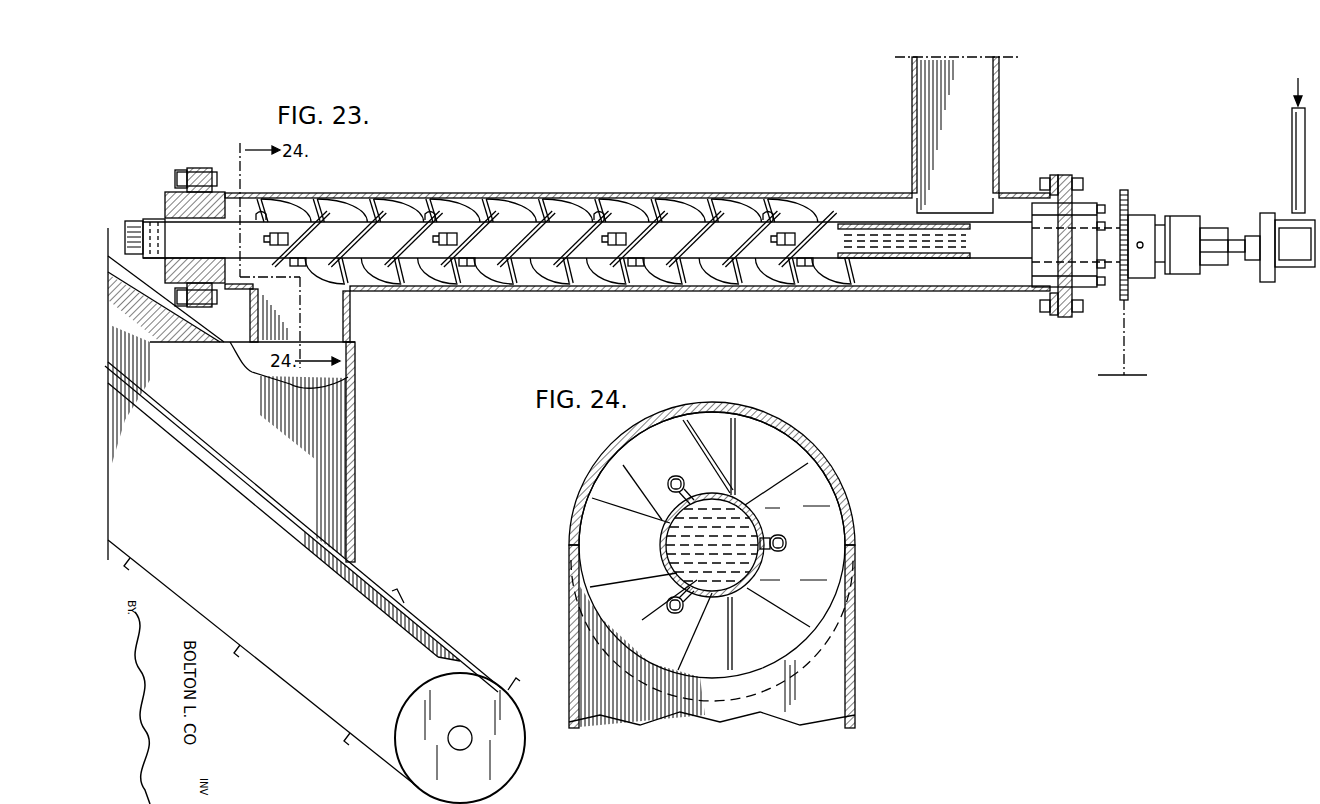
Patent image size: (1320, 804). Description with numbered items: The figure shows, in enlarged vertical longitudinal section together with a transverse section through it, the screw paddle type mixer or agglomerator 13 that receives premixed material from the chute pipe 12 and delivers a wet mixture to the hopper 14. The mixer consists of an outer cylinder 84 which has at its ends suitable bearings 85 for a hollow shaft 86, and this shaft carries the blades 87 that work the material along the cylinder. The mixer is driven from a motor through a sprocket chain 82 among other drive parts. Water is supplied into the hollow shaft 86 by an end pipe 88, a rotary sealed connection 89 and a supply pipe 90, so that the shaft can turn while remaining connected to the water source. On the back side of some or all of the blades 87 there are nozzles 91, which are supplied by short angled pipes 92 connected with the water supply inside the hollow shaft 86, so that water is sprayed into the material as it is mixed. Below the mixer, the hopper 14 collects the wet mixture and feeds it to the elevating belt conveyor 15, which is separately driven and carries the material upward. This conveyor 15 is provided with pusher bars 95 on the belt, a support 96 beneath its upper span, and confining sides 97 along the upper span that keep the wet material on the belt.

In FIG. 23, the chute pipe 12 is at (999, 113).
In FIG. 23, the screw paddle type mixer or agglomerator 13 is at (580, 193).
In FIG. 24, the screw paddle type mixer or agglomerator 13 is at (797, 434).
In FIG. 23, the hopper 14 is at (345, 413).
In FIG. 24, the hopper 14 is at (835, 682).
In FIG. 23, the elevating belt conveyor 15 is at (435, 623).
In FIG. 23, the sprocket chain 82 is at (1130, 337).
In FIG. 23, the outer cylinder 84 is at (714, 196).
In FIG. 24, the outer cylinder 84 is at (848, 470).
In FIG. 23, the bearings 85 is at (183, 197).
In FIG. 23, the hollow shaft 86 is at (863, 224).
In FIG. 24, the hollow shaft 86 is at (659, 542).
In FIG. 23, the blades 87 is at (372, 205).
In FIG. 24, the blades 87 is at (738, 463).
In FIG. 23, the end pipe 88 is at (1237, 235).
In FIG. 23, the rotary sealed connection 89 is at (1297, 268).
In FIG. 23, the supply pipe 90 is at (1292, 136).
In FIG. 23, the nozzles 91 is at (272, 240).
In FIG. 24, the nozzles 91 is at (668, 486).
In FIG. 24, the short angled pipes 92 is at (690, 496).
In FIG. 23, the pusher bars 95 is at (398, 586).
In FIG. 23, the support 96 is at (318, 548).
In FIG. 23, the confining sides 97 is at (152, 311).